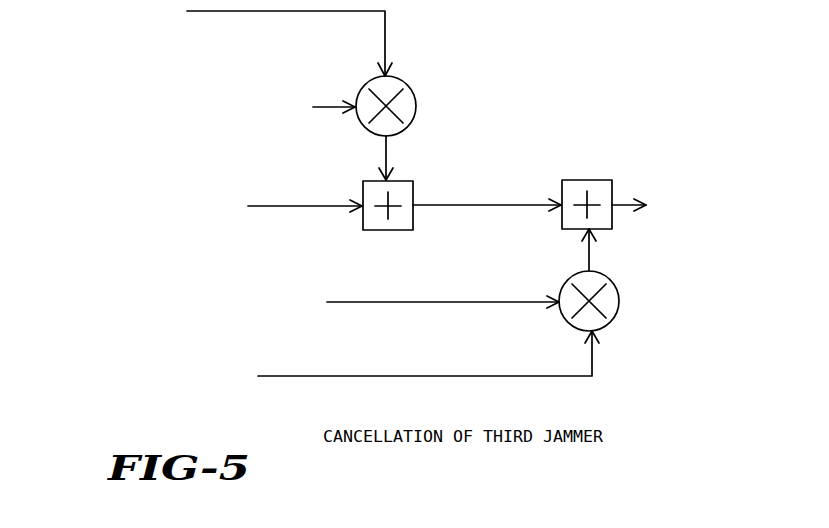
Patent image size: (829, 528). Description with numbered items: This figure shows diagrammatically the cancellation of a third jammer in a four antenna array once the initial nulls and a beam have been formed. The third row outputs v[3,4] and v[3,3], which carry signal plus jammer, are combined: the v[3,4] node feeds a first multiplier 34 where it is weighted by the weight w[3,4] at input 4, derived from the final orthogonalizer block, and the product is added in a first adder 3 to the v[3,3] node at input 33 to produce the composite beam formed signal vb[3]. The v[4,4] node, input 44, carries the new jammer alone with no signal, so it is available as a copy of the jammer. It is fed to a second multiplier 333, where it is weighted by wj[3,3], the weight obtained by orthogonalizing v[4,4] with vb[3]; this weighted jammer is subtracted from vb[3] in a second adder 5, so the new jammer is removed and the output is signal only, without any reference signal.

The first multiplier receiving V[3,4] (signal+jammer) input 34 is at (223, 73).
The weight input Wb[3,4] to first multiplier 4 is at (278, 117).
The first adder producing Vb[3] 3 is at (462, 183).
The V[3,3] (signal+jammer) input to first adder 33 is at (222, 206).
The second adder producing signal only output 5 is at (670, 204).
The second multiplier receiving weight Wj[3,3] 333 is at (409, 280).
The V[4,4] (jammer only) input to second multiplier 44 is at (324, 367).